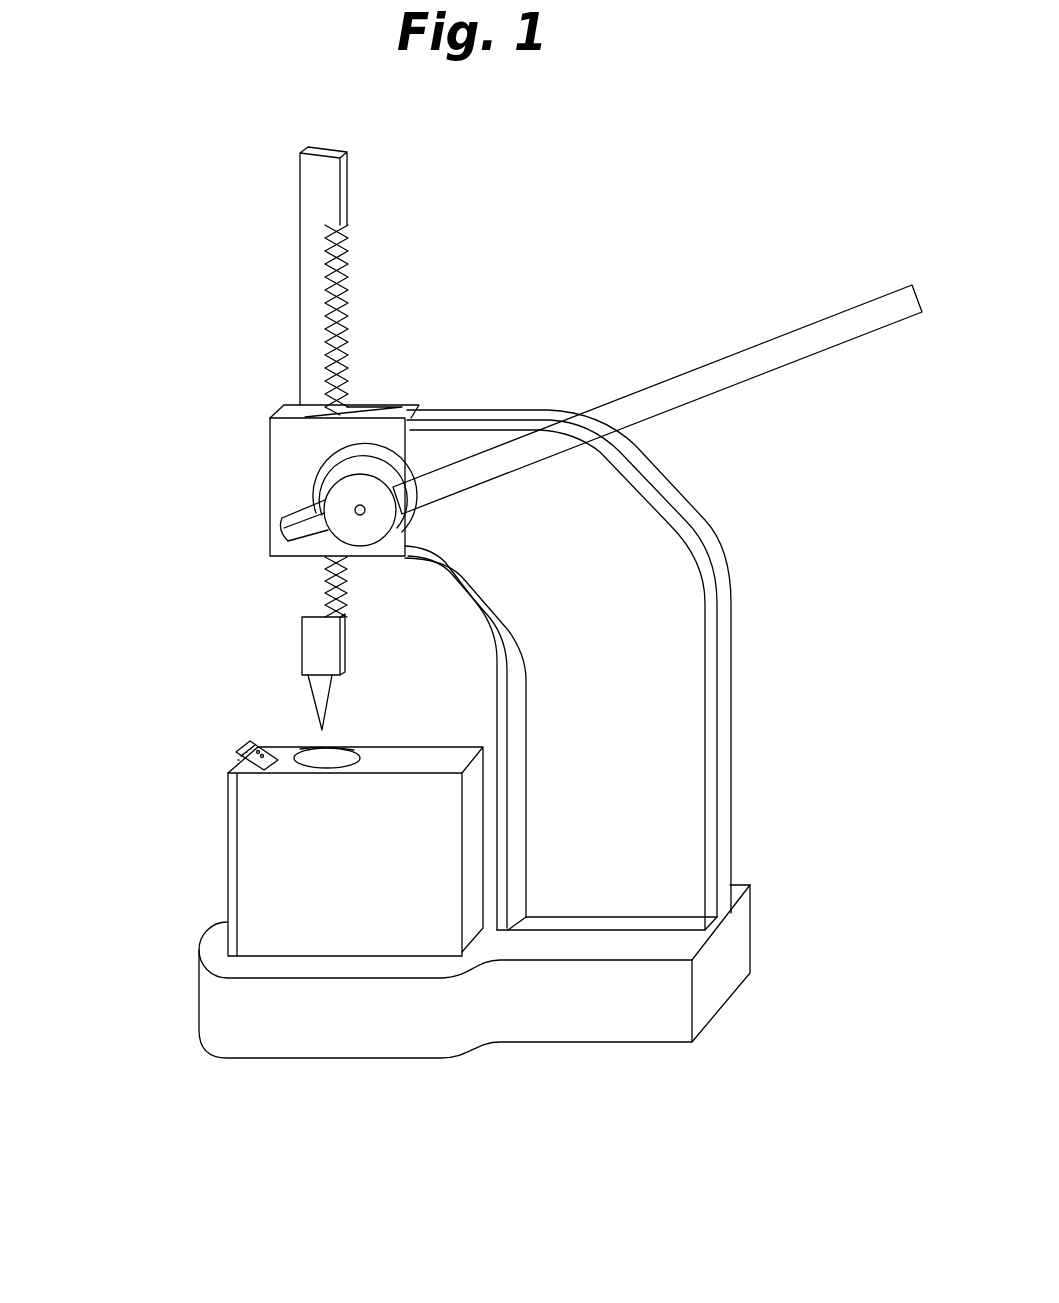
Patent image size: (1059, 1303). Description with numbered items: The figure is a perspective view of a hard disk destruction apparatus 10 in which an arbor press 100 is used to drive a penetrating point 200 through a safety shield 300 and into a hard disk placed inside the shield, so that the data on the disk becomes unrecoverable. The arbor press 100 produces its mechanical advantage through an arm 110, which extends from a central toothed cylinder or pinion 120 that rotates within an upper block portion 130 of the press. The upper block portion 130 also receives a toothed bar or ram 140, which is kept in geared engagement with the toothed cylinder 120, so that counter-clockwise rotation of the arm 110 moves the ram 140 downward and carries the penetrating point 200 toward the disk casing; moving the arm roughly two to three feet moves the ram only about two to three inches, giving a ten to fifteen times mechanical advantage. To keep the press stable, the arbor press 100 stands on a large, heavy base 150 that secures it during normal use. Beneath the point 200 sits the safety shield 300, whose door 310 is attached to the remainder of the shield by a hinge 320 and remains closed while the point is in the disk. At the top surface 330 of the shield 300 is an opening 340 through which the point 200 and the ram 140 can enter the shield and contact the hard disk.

The hard disk destruction apparatus 10 is at (713, 210).
The arbor press 100 is at (720, 583).
The arm 110 is at (763, 348).
The toothed cylinder 120 is at (280, 520).
The upper block portion 130 is at (268, 416).
The ram 140 is at (298, 192).
The base 150 is at (647, 1020).
The penetrating point 200 is at (320, 693).
The safety shield 300 is at (287, 849).
The door 310 is at (226, 899).
The hinge 320 is at (232, 758).
The top surface 330 is at (290, 750).
The opening 340 is at (317, 747).